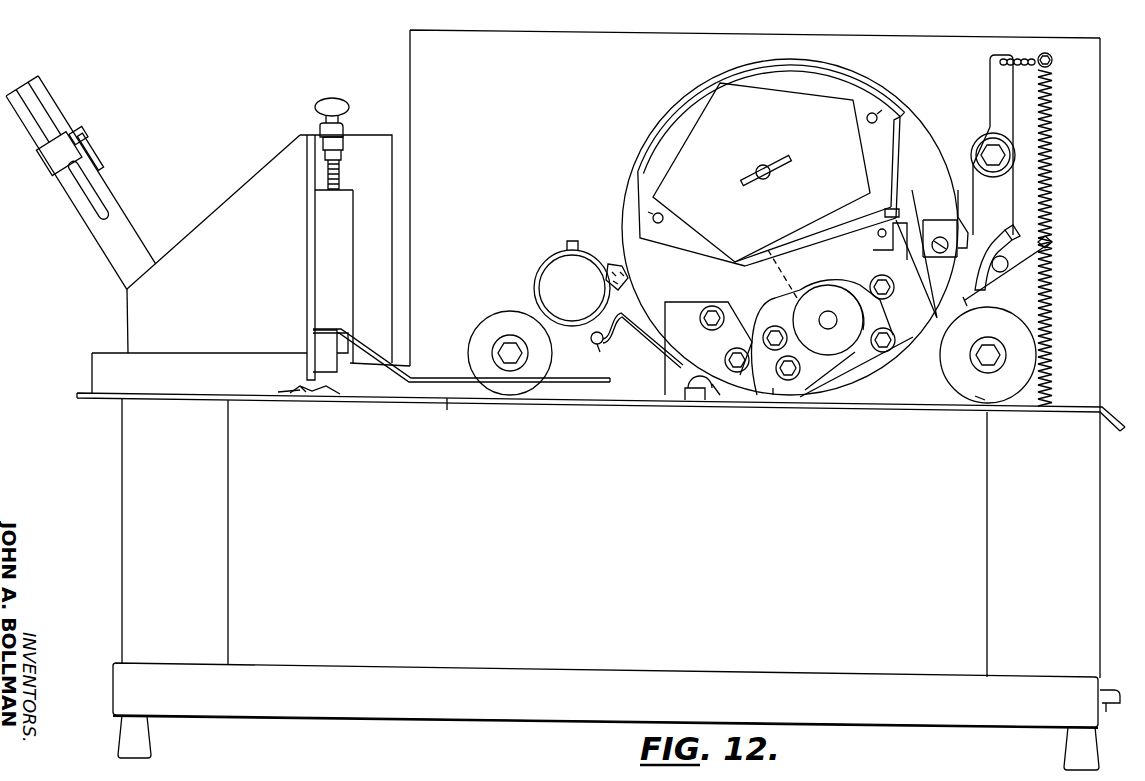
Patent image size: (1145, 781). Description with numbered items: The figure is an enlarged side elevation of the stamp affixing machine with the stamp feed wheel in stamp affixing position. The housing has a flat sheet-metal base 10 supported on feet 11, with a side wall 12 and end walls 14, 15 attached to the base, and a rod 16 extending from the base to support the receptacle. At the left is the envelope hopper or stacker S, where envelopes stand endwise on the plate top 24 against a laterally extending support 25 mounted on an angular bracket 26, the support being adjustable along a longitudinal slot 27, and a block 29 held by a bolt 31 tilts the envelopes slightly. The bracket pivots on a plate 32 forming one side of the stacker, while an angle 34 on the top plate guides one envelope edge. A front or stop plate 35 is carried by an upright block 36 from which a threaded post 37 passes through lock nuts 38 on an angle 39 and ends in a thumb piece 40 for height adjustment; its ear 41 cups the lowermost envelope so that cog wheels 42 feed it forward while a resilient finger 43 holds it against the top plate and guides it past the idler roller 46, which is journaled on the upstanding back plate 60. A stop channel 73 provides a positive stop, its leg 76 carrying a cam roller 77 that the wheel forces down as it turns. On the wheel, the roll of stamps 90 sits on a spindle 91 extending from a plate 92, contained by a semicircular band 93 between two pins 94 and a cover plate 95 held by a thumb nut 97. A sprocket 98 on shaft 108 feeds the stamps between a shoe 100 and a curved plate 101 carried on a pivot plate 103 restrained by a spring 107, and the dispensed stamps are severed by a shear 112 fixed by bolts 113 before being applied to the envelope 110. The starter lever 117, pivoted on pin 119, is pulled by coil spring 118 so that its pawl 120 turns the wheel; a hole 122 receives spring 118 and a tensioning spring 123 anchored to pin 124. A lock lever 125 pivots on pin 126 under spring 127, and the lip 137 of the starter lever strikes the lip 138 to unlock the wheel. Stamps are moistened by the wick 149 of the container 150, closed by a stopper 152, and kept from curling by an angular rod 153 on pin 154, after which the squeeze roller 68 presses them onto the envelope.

The base 10 is at (575, 719).
The feet 11 is at (125, 752).
The side wall 12 is at (432, 667).
The end wall 14 is at (122, 645).
The end wall 15 is at (1084, 639).
The rod 16 is at (1112, 713).
The plate top 24 is at (361, 401).
The support 25 is at (60, 140).
The angular bracket 26 is at (148, 262).
The longitudinal slot 27 is at (30, 96).
The block 29 is at (101, 169).
The bolt 31 is at (86, 139).
The plate 32 is at (258, 173).
The angle 34 is at (113, 355).
The front or stop plate 35 is at (308, 276).
The upright block 36 is at (345, 278).
The threaded post 37 is at (340, 174).
The lock nuts 38 is at (345, 137).
The angle 39 is at (321, 130).
The thumb piece 40 is at (326, 100).
The projection or ear 41 is at (305, 378).
The cog wheels 42 is at (278, 396).
The resilient angular finger 43 is at (449, 410).
The idler roller 46 is at (486, 330).
The back plate 60 is at (444, 100).
The squeeze roller 68 is at (975, 396).
The stop channel 73 is at (312, 392).
The leg 76 is at (682, 401).
The cam roller 77 is at (720, 396).
The roll of stamps 90 is at (790, 227).
The spindle 91 is at (756, 172).
The plate 92 is at (897, 186).
The semicircular band 93 is at (668, 112).
The pins 94 is at (878, 118).
The cover plate 95 is at (757, 128).
The thumb nut 97 is at (790, 162).
The sprocket 98 is at (836, 286).
The shoe 100 is at (908, 346).
The curved plate 101 is at (777, 302).
The pivot plate 103 is at (879, 236).
The spring 107 is at (899, 213).
The shaft 108 is at (838, 319).
The envelope 110 is at (607, 400).
The shear 112 is at (670, 300).
The bolts 113 is at (725, 358).
The starter lever 117 is at (1012, 277).
The coil spring 118 is at (1052, 312).
The pin 119 is at (1008, 262).
The pawl 120 is at (988, 355).
The hole 122 is at (1052, 244).
The coil spring 123 is at (1054, 126).
The pin 124 is at (1050, 66).
The lock lever 125 is at (1010, 188).
The pin 126 is at (985, 148).
The coil spring 127 is at (1018, 55).
The lip 137 is at (997, 238).
The lip 138 is at (1014, 236).
The wick 149 is at (613, 262).
The container 150 is at (542, 288).
The stopper 152 is at (570, 240).
The angular metal rod 153 is at (668, 348).
The pin 154 is at (590, 349).
The envelope hopper or stacker S is at (104, 268).